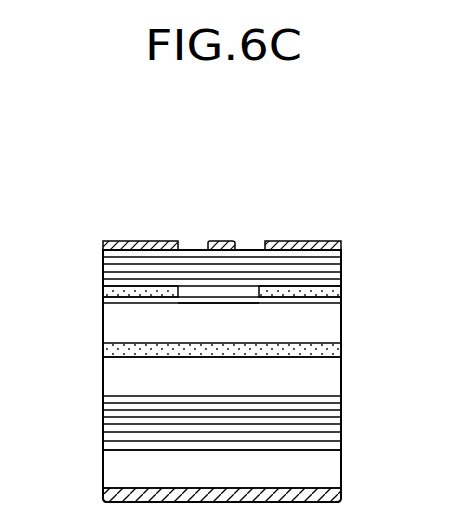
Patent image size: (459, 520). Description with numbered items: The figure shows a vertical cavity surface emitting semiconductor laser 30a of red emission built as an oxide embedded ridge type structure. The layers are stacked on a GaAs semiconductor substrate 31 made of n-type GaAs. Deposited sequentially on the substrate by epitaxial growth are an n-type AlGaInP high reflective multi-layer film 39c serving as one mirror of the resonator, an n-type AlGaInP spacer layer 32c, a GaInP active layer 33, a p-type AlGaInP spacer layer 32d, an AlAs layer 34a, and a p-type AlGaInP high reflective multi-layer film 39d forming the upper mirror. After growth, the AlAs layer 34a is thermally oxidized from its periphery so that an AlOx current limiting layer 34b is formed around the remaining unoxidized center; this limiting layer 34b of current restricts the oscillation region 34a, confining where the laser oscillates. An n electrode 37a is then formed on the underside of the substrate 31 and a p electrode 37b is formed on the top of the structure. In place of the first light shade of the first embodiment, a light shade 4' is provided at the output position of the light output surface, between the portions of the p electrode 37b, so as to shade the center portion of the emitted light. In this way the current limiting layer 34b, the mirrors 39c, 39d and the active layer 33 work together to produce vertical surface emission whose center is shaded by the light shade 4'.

The vertical cavity surface emitting semiconductor laser 30a is at (218, 164).
The p electrode 37b is at (157, 241).
The light shade 4' is at (221, 218).
The p-type AlGaInP high reflective multi-layer film 39d is at (341, 272).
The AlOx current limiting layer 34b is at (107, 292).
The AlAs layer 34a is at (183, 292).
The p-type AlGaInP spacer layer 32d is at (330, 320).
The GaInP active layer 33 is at (341, 350).
The n-type AlGaInP spacer layer 32c is at (330, 377).
The n-type AlGaInP high reflective multi-layer film 39c is at (341, 428).
The GaAs semiconductor substrate 31 is at (330, 465).
The n electrode 37a is at (341, 493).